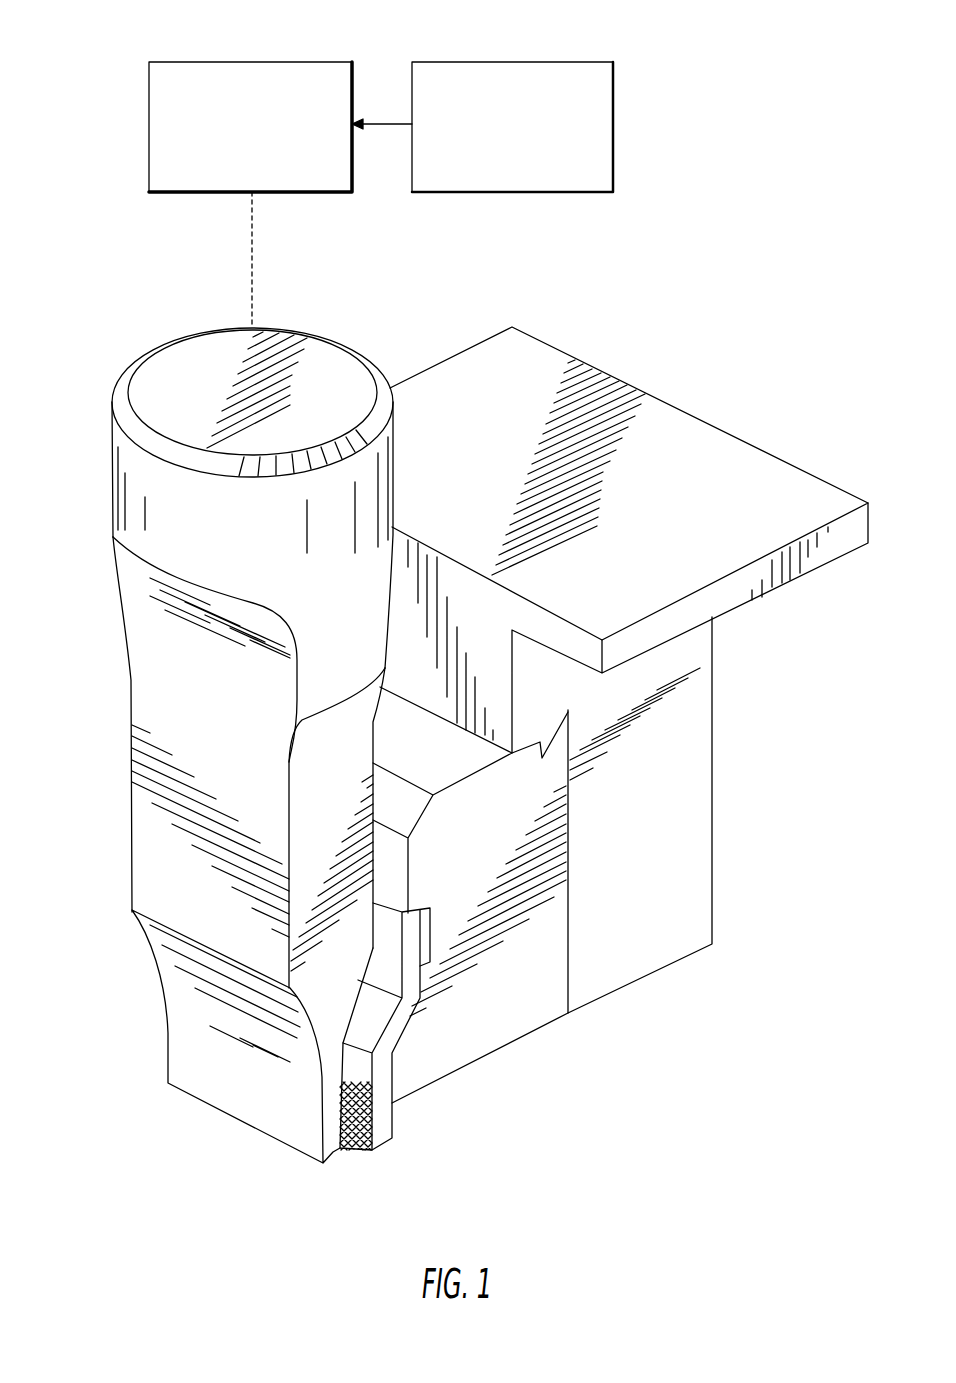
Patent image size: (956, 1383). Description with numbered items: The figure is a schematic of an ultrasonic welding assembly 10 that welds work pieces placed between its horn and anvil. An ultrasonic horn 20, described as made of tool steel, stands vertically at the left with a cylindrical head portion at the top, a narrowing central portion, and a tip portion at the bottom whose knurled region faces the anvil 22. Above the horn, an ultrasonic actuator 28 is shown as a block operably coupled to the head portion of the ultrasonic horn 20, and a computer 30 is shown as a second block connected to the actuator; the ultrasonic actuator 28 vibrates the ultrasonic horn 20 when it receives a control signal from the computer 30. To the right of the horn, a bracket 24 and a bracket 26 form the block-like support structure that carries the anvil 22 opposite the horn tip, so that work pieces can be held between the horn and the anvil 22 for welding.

The ultrasonic welding assembly 10 is at (791, 202).
The ultrasonic horn 20 is at (244, 756).
The anvil 22 is at (385, 1127).
The bracket 24 is at (490, 1045).
The bracket 26 is at (698, 868).
The ultrasonic actuator 28 is at (252, 62).
The computer 30 is at (498, 62).